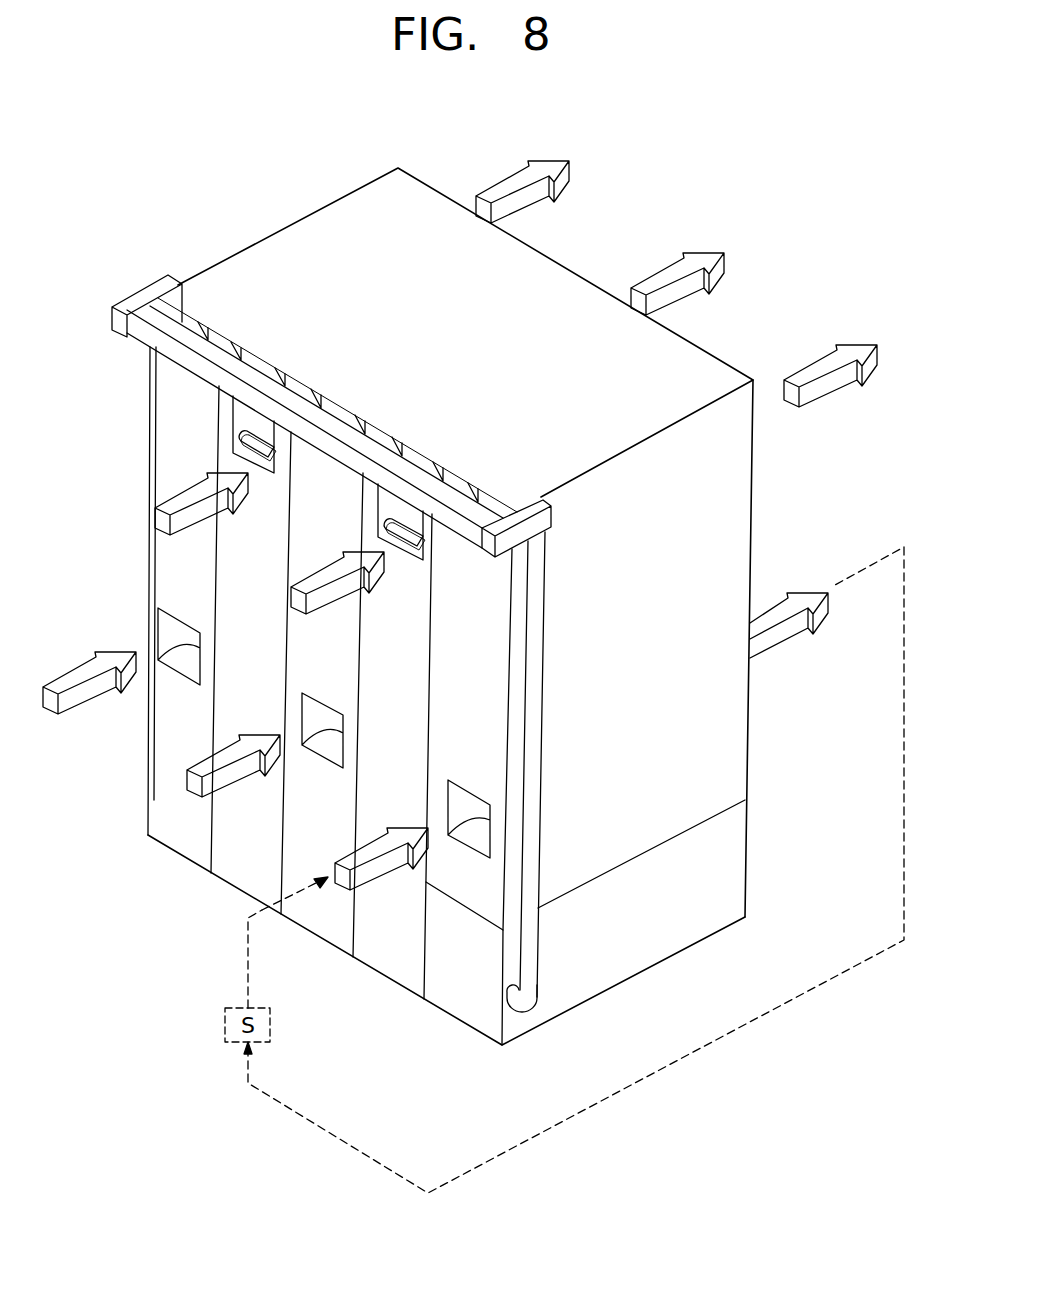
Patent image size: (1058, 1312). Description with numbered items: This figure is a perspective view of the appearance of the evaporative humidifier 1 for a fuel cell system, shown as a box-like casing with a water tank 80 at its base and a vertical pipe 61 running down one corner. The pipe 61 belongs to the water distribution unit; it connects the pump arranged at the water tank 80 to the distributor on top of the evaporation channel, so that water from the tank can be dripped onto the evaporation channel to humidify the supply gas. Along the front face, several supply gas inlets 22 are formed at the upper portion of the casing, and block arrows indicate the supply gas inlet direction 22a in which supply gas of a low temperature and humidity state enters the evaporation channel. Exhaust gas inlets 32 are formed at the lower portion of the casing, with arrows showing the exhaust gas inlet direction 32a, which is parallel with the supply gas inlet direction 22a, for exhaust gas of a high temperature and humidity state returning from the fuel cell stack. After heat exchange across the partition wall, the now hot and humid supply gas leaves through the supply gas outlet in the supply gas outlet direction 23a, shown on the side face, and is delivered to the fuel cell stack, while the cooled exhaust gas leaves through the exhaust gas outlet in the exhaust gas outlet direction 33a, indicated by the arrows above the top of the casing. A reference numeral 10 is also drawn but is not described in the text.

The evaporative humidifier 1 is at (144, 177).
The top rail 10 is at (240, 253).
The supply gas inlet 22 is at (400, 507).
The supply gas inlet direction 22a is at (290, 596).
The supply gas outlet direction 23a is at (813, 602).
The exhaust gas inlet 32 is at (322, 720).
The exhaust gas inlet direction 32a is at (350, 862).
The exhaust gas outlet direction 33a is at (853, 343).
The pipe 61 is at (533, 932).
The water tank 80 is at (727, 855).